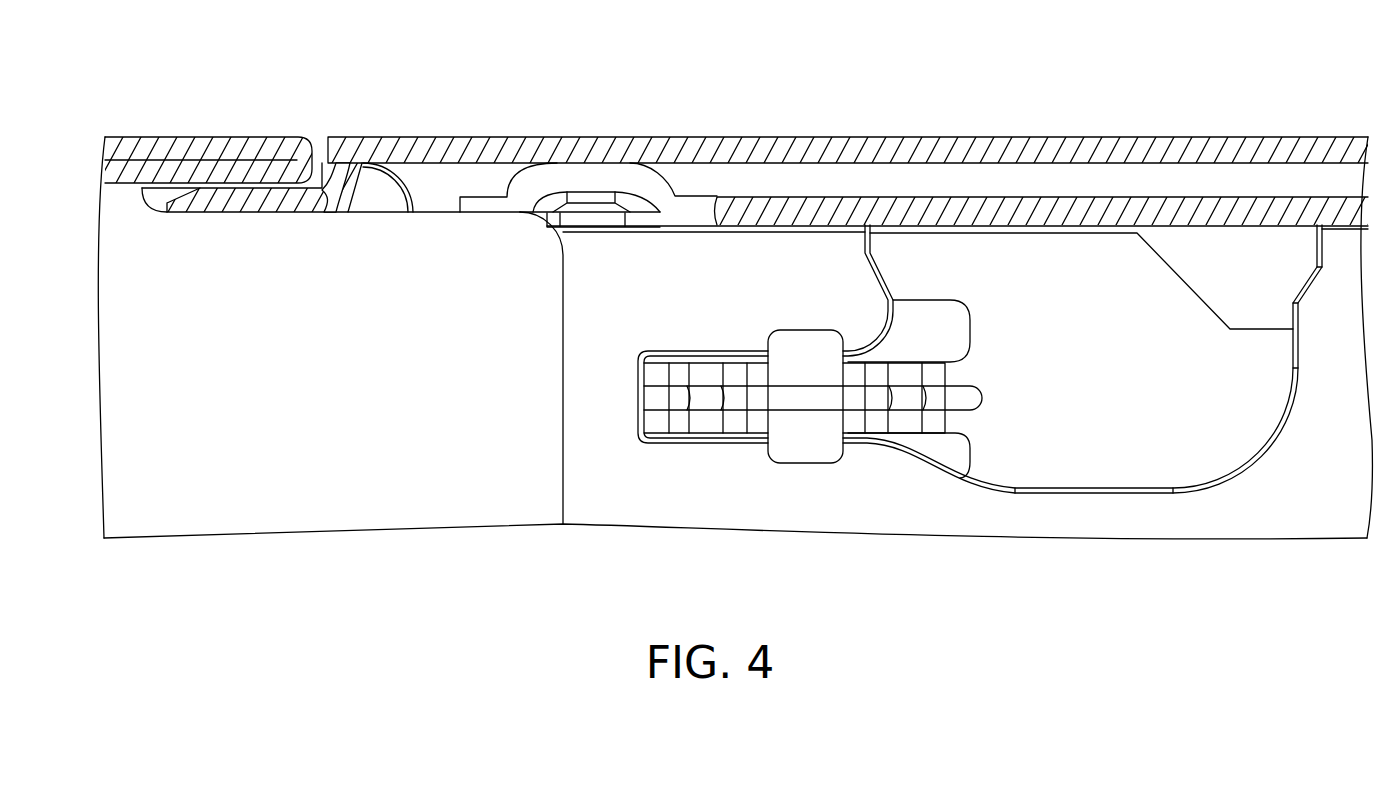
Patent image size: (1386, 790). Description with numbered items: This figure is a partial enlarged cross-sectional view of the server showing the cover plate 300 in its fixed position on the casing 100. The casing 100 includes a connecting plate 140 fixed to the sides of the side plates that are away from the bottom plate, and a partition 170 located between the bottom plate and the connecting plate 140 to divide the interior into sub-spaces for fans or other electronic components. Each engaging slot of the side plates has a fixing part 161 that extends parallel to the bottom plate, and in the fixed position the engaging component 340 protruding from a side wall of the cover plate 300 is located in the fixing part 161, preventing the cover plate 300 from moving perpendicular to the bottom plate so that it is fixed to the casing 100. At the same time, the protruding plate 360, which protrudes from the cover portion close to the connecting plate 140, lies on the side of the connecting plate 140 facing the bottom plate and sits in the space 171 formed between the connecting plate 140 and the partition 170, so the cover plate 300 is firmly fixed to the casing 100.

The casing 100 is at (641, 495).
The connecting plate 140 is at (240, 150).
The fixing part 161 is at (709, 447).
The partition 170 is at (525, 317).
The space 171 is at (167, 192).
The cover plate 300 is at (1030, 283).
The engaging component 340 is at (810, 412).
The protruding plate 360 is at (251, 204).